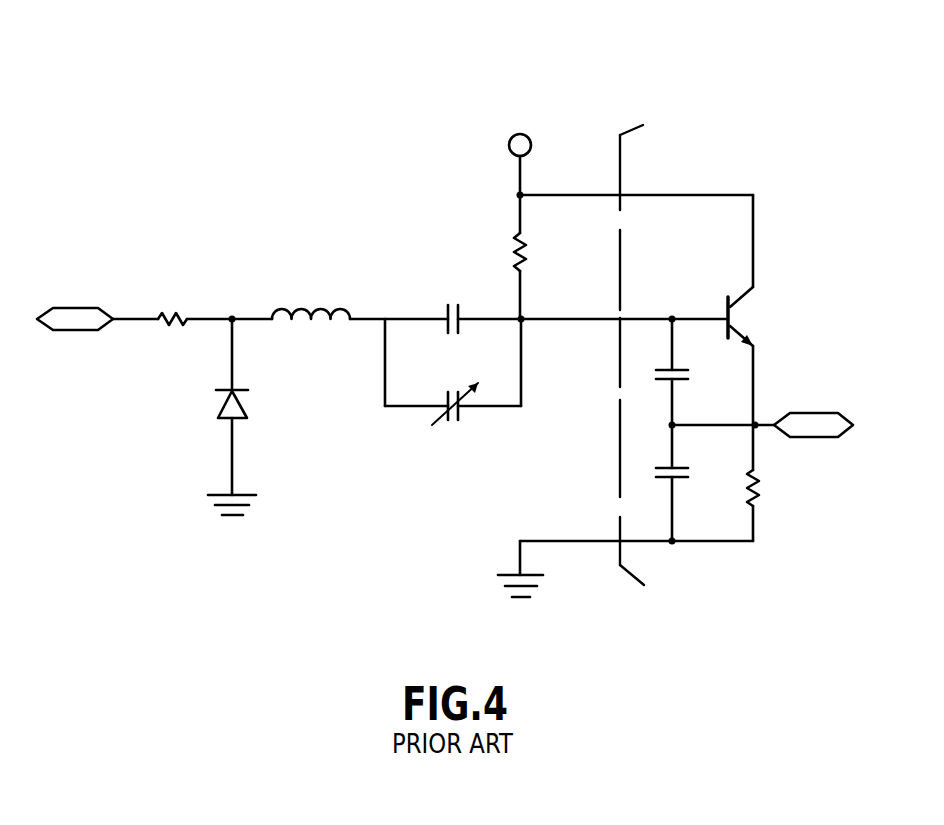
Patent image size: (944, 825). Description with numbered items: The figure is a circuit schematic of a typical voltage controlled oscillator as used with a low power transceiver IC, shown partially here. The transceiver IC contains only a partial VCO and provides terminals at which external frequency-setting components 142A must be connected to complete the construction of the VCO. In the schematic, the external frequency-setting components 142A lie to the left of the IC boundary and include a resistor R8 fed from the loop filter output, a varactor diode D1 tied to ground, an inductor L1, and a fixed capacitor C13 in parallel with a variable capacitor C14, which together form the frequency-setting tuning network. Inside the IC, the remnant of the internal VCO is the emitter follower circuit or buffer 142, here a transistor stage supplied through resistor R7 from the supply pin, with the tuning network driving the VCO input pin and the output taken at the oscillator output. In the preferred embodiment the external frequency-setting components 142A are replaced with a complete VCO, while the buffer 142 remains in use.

The external frequency-setting components 142A is at (617, 76).
The emitter follower circuit or buffer 142 is at (797, 183).
The resistor R8 (47k) R8 is at (172, 348).
The varactor diode D1 (MA4ST350) D1 is at (269, 407).
The inductor L1 (39nH) L1 is at (311, 318).
The capacitor C13 (5.6p) C13 is at (455, 326).
The variable capacitor C14 (3-10p) C14 is at (460, 415).
The resistor R7 (3.6k) R7 is at (549, 252).